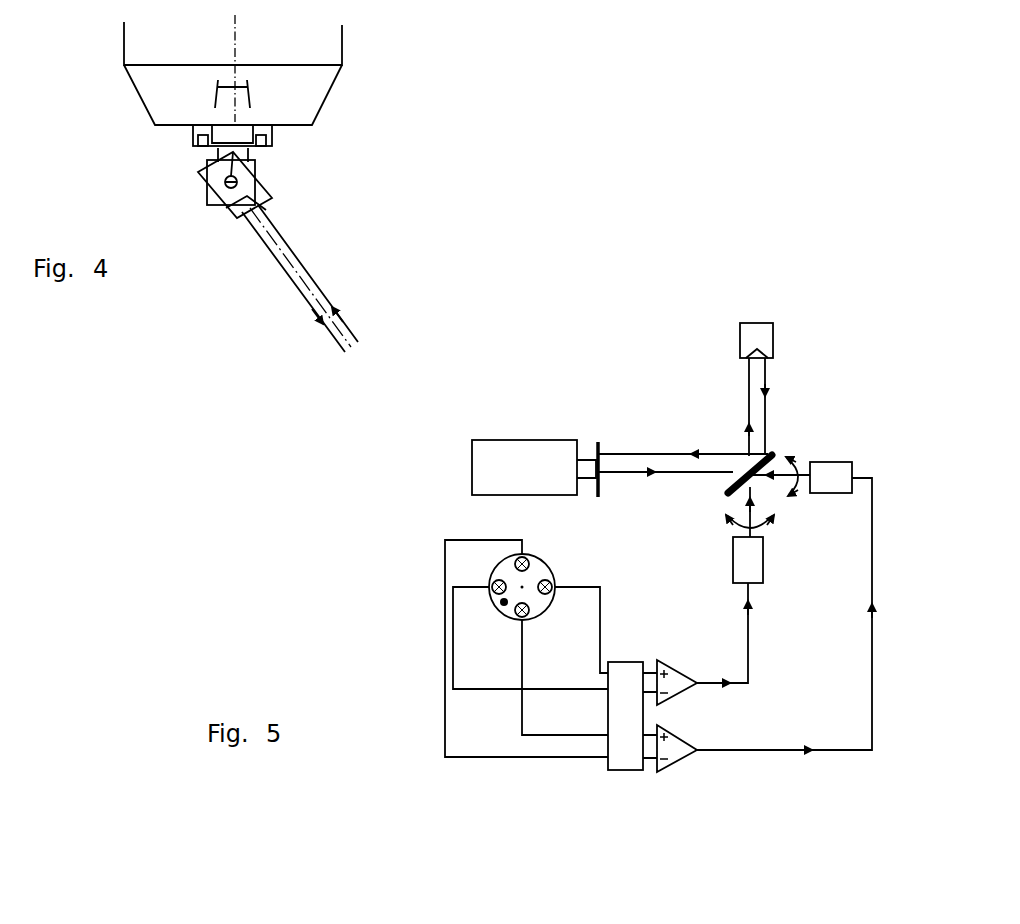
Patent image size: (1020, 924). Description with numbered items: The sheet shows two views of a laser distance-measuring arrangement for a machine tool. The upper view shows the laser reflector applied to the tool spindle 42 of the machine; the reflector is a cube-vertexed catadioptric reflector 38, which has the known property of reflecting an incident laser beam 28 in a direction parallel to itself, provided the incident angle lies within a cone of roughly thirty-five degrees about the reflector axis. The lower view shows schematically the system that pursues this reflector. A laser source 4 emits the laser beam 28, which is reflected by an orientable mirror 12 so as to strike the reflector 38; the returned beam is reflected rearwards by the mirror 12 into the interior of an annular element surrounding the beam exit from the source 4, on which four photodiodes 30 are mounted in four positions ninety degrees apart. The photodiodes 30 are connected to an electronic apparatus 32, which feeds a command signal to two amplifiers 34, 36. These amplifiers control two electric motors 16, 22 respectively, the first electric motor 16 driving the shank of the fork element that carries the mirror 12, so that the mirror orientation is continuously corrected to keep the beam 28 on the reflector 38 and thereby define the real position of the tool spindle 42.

In FIG. 5, the laser source 4 is at (472, 466).
In FIG. 5, the mirror 12 is at (771, 451).
In FIG. 5, the first electric motor 16 is at (828, 472).
In FIG. 5, the electric motor 22 is at (746, 558).
In FIG. 5, the laser beam 28 is at (630, 472).
In FIG. 5, the photodiodes 30 is at (517, 563).
In FIG. 5, the electronic apparatus 32 is at (623, 756).
In FIG. 5, the amplifier 34 is at (665, 749).
In FIG. 5, the amplifier 36 is at (665, 683).
In FIG. 4, the cube-vertexed catadioptric reflector 38 is at (259, 196).
In FIG. 5, the cube-vertexed catadioptric reflector 38 is at (741, 342).
In FIG. 4, the tool spindle 42 is at (266, 133).